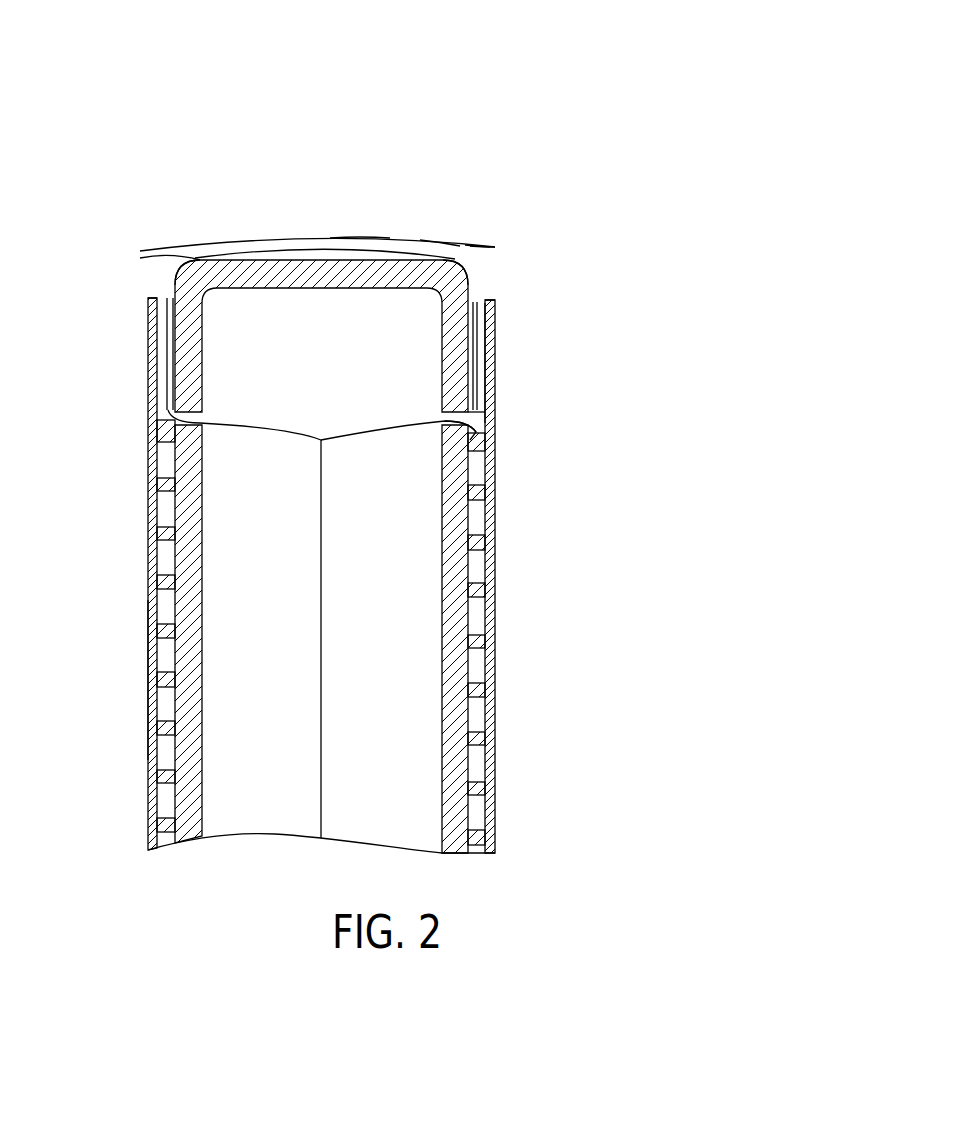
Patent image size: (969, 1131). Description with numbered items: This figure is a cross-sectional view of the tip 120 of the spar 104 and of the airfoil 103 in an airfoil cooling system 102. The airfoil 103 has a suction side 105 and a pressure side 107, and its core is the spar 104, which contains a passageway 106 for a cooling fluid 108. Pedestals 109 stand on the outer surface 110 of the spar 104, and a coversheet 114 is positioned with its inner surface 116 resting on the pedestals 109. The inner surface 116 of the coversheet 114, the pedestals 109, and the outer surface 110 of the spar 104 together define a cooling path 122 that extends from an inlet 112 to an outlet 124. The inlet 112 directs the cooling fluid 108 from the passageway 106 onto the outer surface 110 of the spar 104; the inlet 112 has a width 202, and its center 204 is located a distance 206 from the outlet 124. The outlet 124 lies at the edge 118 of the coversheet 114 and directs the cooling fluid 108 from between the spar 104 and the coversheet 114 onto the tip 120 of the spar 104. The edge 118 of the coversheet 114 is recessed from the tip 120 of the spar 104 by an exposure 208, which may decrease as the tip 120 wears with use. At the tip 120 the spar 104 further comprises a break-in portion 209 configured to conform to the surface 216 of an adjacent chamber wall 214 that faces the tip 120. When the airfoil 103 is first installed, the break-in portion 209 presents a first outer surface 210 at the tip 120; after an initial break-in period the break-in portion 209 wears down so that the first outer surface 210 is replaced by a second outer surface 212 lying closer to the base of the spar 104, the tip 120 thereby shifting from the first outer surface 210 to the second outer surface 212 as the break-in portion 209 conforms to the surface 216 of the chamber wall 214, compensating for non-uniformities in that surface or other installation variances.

The airfoil cooling system 102 is at (613, 74).
The airfoil 103 is at (613, 243).
The spar 104 is at (176, 800).
The suction side 105 is at (150, 672).
The passageway 106 is at (210, 757).
The pressure side 107 is at (488, 700).
The cooling fluid 108 is at (321, 730).
The pedestals 109 is at (158, 534).
The outer surface 110 is at (165, 366).
The inlet 112 is at (158, 424).
The coversheet 114 is at (146, 338).
The inner surface 116 is at (163, 357).
The edge 118 is at (149, 302).
The tip 120 is at (287, 250).
The cooling path 122 is at (162, 396).
The outlet 124 is at (168, 292).
The width 202 is at (505, 412).
The center 204 is at (488, 436).
The distance 206 is at (572, 303).
The exposure 208 is at (130, 255).
The break-in portion 209 is at (403, 257).
The first outer surface 210 is at (442, 242).
The second outer surface 212 is at (349, 245).
The chamber wall 214 is at (492, 250).
The surface 216 is at (483, 230).